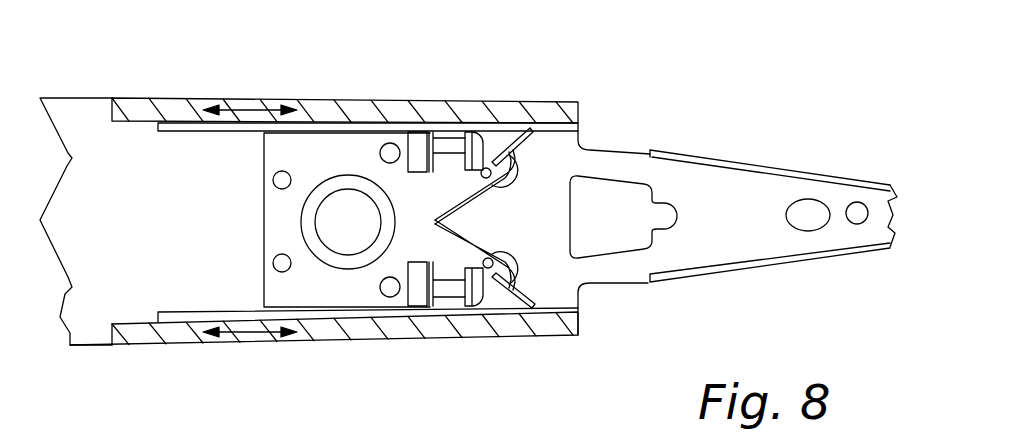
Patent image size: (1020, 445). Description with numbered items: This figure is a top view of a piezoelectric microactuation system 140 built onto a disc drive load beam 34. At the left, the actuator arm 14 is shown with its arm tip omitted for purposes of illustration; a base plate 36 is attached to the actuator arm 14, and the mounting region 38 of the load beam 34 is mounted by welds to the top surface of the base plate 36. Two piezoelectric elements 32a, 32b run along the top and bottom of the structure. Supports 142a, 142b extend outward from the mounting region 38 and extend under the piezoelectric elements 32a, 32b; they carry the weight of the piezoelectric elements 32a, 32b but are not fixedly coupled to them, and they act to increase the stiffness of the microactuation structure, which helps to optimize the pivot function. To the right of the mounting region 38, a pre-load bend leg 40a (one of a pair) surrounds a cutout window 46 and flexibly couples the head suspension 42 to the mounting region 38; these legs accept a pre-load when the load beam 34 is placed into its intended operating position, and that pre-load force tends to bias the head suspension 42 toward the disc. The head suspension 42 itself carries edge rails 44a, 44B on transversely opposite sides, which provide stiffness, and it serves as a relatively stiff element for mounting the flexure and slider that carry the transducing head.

The actuator arm 14 is at (112, 155).
The microactuation system 140 is at (362, 83).
The mounting region 38 is at (370, 160).
The piezoelectric element 32a is at (440, 114).
The piezoelectric element 32b is at (368, 323).
The support 142a is at (457, 137).
The support 142b is at (453, 297).
The base plate 36 is at (420, 308).
The load beam 34 is at (711, 89).
The pre-load bend leg 40a is at (590, 150).
The cutout window 46 is at (595, 243).
The edge rail 44a is at (710, 155).
The edge rail 44B is at (773, 262).
The head suspension 42 is at (753, 182).